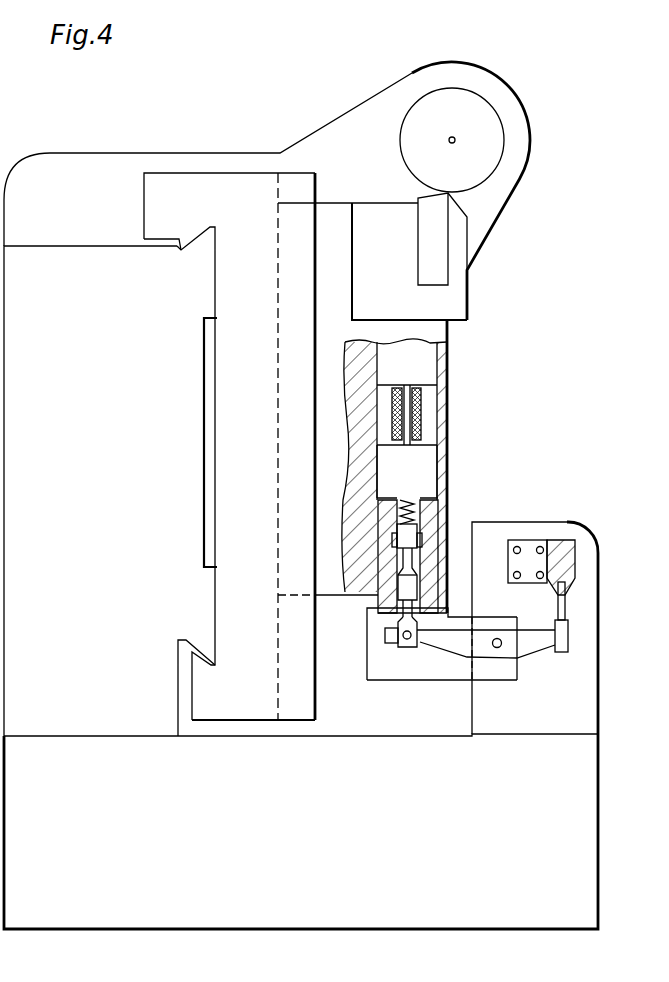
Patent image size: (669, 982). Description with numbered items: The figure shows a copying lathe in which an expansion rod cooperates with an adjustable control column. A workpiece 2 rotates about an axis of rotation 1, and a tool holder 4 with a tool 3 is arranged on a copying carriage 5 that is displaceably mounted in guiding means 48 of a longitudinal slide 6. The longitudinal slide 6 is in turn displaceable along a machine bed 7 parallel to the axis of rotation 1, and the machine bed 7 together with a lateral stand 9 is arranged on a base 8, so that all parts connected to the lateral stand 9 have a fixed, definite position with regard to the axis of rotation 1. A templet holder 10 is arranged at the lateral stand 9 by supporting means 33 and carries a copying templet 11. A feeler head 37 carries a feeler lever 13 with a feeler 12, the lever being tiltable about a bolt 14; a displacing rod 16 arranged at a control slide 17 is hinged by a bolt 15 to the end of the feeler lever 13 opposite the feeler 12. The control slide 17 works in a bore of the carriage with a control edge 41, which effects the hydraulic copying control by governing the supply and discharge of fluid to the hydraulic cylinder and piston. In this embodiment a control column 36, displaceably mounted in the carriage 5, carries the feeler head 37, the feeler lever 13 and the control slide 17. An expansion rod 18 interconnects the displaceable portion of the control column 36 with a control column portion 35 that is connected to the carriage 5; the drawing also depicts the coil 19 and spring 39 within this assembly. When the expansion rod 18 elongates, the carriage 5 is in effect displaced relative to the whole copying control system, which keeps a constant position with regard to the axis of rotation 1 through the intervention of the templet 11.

The axis of rotation 1 is at (456, 138).
The workpiece 2 is at (478, 148).
The tool 3 is at (435, 246).
The tool holder 4 is at (390, 288).
The copying carriage 5 is at (340, 349).
The longitudinal slide 6 is at (252, 349).
The machine bed 7 is at (109, 349).
The base 8 is at (309, 774).
The lateral stand 9 is at (493, 584).
The templet holder 10 is at (563, 555).
The copying templet 11 is at (565, 607).
The feeler 12 is at (567, 632).
The feeler lever 13 is at (482, 652).
The bolt 14 is at (502, 642).
The bolt 15 is at (392, 636).
The displacing rod 16 is at (383, 613).
The control slide 17 is at (440, 560).
The expansion rod 18 is at (408, 430).
The coil 19 is at (420, 398).
The supporting means 33 is at (528, 558).
The control column portion 35 is at (421, 367).
The control column 36 is at (413, 465).
The feeler head 37 is at (382, 672).
The spring 39 is at (415, 502).
The control edge 41 is at (423, 533).
The guiding means 48 is at (279, 362).